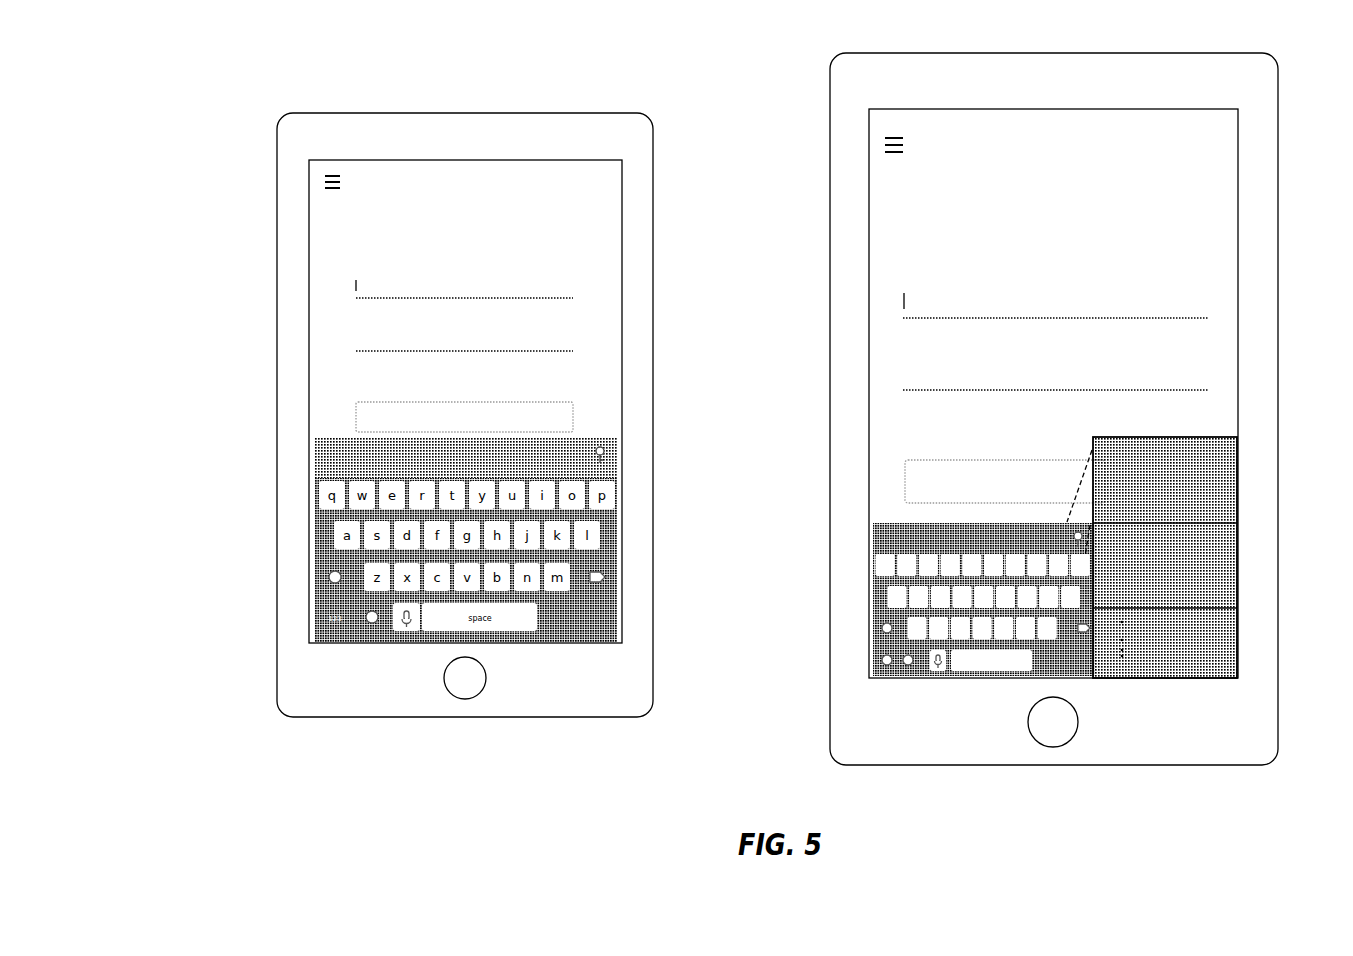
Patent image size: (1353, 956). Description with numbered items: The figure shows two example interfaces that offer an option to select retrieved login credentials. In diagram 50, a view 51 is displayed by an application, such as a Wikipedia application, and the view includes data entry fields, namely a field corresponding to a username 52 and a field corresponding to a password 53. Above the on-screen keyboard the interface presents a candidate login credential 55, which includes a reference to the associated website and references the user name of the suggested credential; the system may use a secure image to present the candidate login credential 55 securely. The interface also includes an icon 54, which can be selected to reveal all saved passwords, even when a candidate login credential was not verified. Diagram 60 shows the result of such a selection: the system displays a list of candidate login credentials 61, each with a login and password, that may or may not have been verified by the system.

The diagram 50 is at (435, 92).
The view 51 is at (603, 195).
The username data entry field 52 is at (460, 290).
The password data entry field 53 is at (460, 340).
The icon 54 is at (610, 455).
The candidate login credential 55 is at (337, 457).
The diagram 60 is at (1010, 42).
The list of candidate login credentials 61 is at (1195, 437).